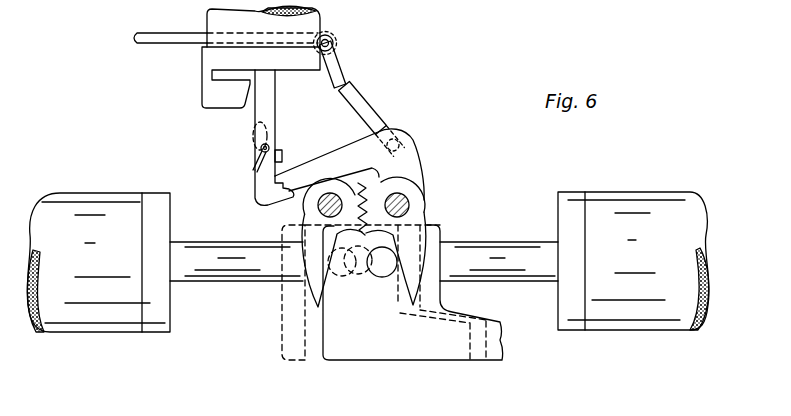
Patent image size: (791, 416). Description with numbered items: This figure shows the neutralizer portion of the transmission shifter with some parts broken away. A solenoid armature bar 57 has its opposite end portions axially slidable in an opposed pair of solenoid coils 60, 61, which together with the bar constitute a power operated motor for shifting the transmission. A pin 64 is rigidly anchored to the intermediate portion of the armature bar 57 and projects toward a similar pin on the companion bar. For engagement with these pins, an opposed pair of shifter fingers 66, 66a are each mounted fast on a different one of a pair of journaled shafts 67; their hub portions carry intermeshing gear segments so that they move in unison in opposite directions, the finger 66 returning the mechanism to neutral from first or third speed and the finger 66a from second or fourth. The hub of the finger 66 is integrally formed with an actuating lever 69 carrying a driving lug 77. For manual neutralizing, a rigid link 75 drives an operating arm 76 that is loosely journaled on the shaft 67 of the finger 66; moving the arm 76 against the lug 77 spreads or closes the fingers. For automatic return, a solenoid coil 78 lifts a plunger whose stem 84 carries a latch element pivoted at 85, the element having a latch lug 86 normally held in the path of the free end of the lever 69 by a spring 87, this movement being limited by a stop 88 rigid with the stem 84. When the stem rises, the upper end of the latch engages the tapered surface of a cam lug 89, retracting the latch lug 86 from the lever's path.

The solenoid armature bar 57 is at (214, 283).
The solenoid coil 60 is at (622, 206).
The solenoid coil 61 is at (86, 206).
The pin 64 is at (345, 277).
The shifter finger 66 is at (413, 257).
The shifter finger 66a is at (300, 274).
The journaled shaft 67 is at (326, 208).
The actuating lever 69 is at (412, 168).
The rigid link 75 is at (166, 41).
The operating arm 76 is at (352, 95).
The driving pin or lug 77 is at (401, 141).
The solenoid coil 78 is at (318, 23).
The stem 84 is at (272, 100).
The pivot 85 is at (260, 148).
The latch lug 86 is at (252, 204).
The spring 87 is at (262, 160).
The stop 88 is at (283, 156).
The cam lug 89 is at (230, 94).